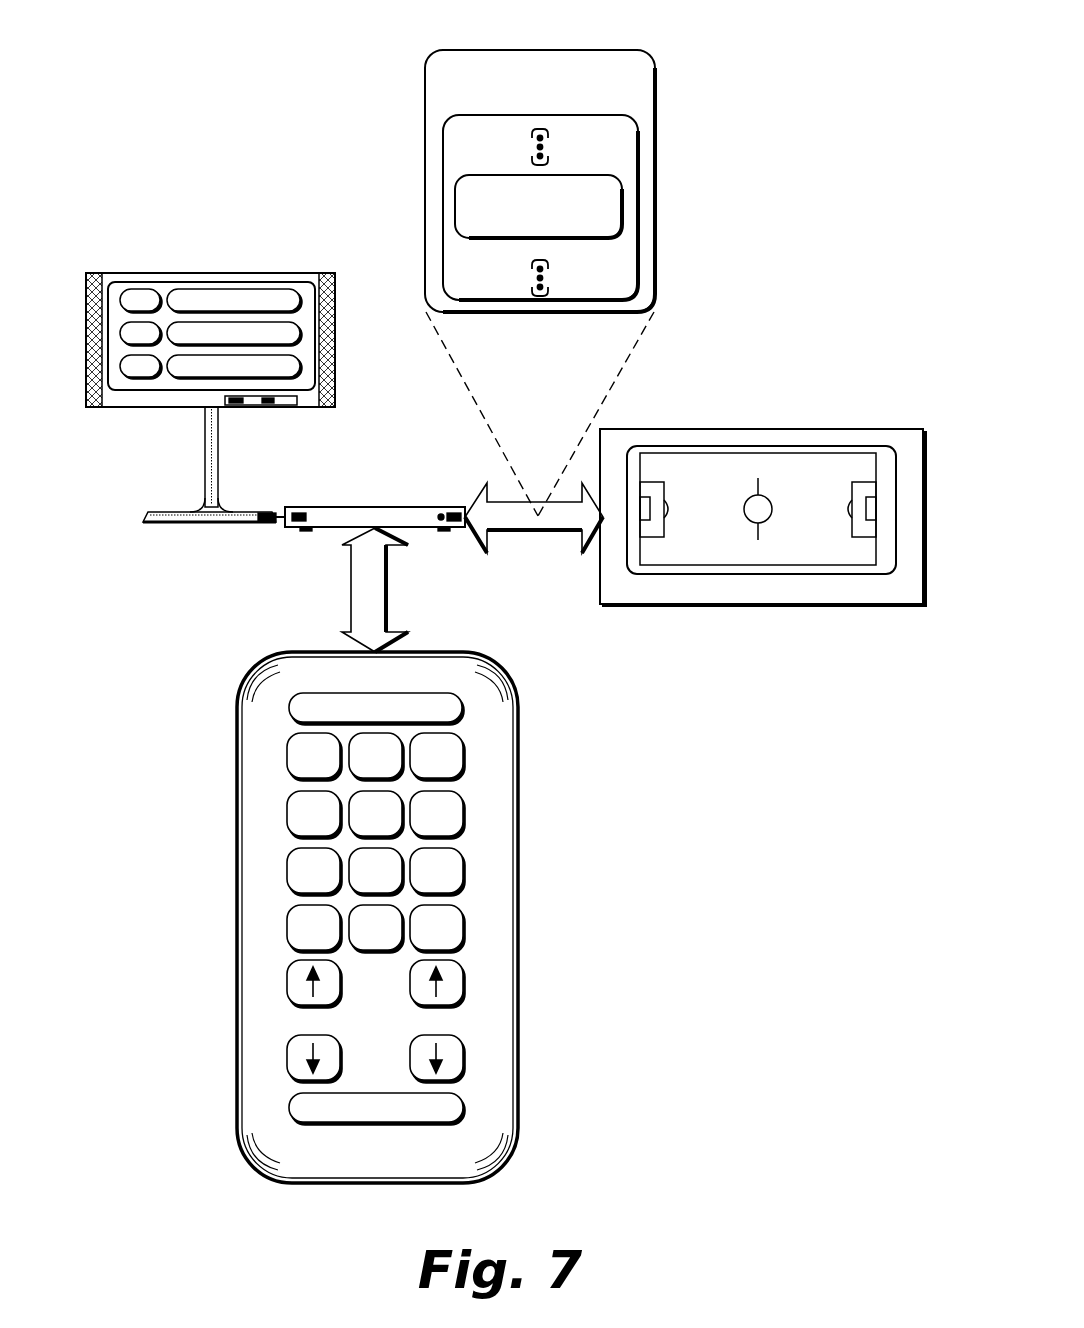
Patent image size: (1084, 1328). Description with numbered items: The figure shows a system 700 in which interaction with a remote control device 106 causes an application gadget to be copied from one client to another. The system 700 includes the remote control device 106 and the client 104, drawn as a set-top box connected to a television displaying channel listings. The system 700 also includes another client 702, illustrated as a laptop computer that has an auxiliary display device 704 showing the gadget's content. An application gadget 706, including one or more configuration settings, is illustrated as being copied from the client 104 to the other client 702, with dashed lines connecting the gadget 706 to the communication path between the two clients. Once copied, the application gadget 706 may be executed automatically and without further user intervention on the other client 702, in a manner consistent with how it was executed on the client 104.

The system 700 is at (196, 72).
The client 104 is at (324, 507).
The remote control device 106 is at (451, 652).
The other client 702 is at (785, 605).
The auxiliary display device 704 is at (760, 445).
The application gadget 706 is at (540, 181).